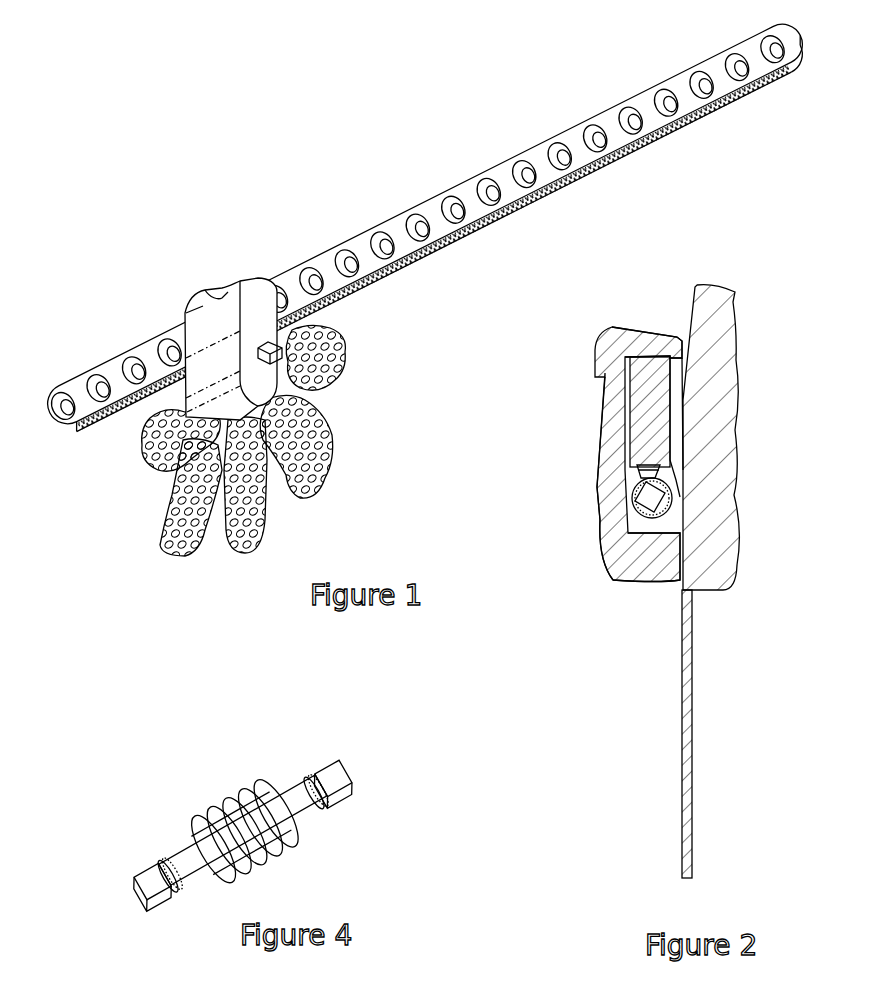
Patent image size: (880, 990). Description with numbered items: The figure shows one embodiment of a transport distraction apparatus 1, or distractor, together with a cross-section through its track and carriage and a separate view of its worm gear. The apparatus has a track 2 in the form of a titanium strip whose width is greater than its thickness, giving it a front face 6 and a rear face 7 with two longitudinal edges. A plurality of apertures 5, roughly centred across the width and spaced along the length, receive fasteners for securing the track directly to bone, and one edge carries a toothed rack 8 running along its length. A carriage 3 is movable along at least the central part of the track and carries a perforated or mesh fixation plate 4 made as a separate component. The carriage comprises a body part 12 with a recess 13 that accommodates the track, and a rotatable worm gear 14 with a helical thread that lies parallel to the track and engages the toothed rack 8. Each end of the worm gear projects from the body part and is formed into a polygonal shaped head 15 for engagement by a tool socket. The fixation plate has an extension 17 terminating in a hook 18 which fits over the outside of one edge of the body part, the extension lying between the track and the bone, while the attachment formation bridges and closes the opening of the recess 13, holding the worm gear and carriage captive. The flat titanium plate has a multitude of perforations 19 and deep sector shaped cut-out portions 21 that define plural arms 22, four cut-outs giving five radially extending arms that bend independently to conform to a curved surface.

In FIG. 1, the transport distraction apparatus 1 is at (172, 110).
In FIG. 1, the track 2 is at (400, 237).
In FIG. 2, the track 2 is at (650, 393).
In FIG. 1, the carriage 3 is at (200, 322).
In FIG. 2, the carriage 3 is at (590, 431).
In FIG. 1, the fixation plate 4 is at (183, 557).
In FIG. 2, the fixation plate 4 is at (692, 740).
In FIG. 1, the apertures 5 is at (418, 228).
In FIG. 1, the front face 6 is at (425, 223).
In FIG. 1, the rear face 7 is at (795, 53).
In FIG. 1, the toothed rack 8 is at (434, 247).
In FIG. 1, the body part 12 is at (205, 347).
In FIG. 2, the body part 12 is at (607, 477).
In FIG. 2, the recess 13 is at (663, 528).
In FIG. 2, the worm gear 14 is at (650, 513).
In FIG. 4, the worm gear 14 is at (244, 831).
In FIG. 1, the polygonal shaped head 15 is at (270, 345).
In FIG. 2, the polygonal shaped head 15 is at (652, 500).
In FIG. 4, the polygonal shaped head 15 is at (243, 835).
In FIG. 2, the extension 17 is at (680, 420).
In FIG. 2, the hook 18 is at (647, 332).
In FIG. 1, the perforations 19 is at (347, 350).
In FIG. 1, the sector shaped cut-out portions 21 is at (335, 408).
In FIG. 1, the arms 22 is at (147, 443).